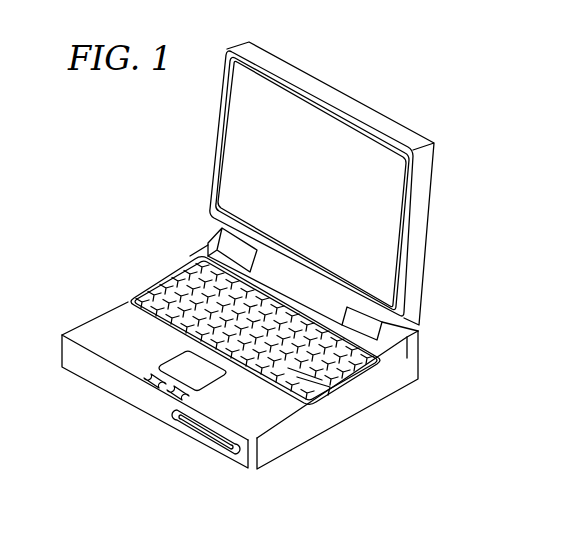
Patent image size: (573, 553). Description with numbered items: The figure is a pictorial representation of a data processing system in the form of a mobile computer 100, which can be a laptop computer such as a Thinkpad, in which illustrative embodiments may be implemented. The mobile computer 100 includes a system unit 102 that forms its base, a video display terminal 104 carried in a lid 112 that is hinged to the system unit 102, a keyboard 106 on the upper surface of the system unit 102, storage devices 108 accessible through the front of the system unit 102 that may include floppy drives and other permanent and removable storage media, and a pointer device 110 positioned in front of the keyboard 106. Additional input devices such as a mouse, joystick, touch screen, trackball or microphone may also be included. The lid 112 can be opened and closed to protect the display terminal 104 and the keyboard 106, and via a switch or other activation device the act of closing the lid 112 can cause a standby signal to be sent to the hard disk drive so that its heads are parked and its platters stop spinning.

The mobile computer 100 is at (124, 160).
The system unit 102 is at (92, 327).
The video display terminal 104 is at (232, 130).
The keyboard 106 is at (178, 287).
The storage devices 108 is at (193, 427).
The pointer device 110 is at (173, 368).
The lid 112 is at (362, 112).